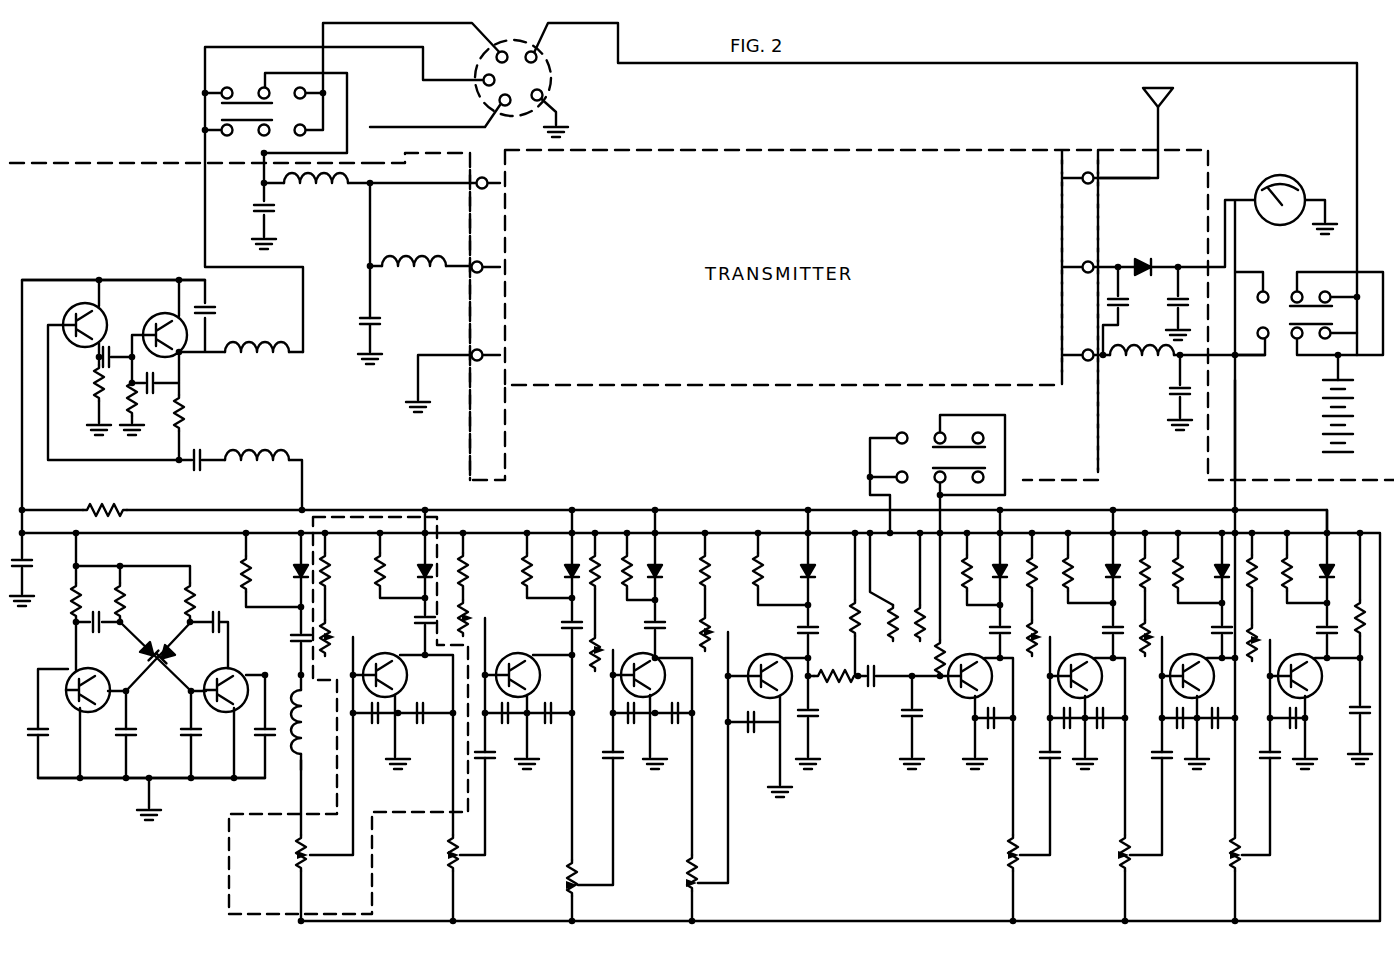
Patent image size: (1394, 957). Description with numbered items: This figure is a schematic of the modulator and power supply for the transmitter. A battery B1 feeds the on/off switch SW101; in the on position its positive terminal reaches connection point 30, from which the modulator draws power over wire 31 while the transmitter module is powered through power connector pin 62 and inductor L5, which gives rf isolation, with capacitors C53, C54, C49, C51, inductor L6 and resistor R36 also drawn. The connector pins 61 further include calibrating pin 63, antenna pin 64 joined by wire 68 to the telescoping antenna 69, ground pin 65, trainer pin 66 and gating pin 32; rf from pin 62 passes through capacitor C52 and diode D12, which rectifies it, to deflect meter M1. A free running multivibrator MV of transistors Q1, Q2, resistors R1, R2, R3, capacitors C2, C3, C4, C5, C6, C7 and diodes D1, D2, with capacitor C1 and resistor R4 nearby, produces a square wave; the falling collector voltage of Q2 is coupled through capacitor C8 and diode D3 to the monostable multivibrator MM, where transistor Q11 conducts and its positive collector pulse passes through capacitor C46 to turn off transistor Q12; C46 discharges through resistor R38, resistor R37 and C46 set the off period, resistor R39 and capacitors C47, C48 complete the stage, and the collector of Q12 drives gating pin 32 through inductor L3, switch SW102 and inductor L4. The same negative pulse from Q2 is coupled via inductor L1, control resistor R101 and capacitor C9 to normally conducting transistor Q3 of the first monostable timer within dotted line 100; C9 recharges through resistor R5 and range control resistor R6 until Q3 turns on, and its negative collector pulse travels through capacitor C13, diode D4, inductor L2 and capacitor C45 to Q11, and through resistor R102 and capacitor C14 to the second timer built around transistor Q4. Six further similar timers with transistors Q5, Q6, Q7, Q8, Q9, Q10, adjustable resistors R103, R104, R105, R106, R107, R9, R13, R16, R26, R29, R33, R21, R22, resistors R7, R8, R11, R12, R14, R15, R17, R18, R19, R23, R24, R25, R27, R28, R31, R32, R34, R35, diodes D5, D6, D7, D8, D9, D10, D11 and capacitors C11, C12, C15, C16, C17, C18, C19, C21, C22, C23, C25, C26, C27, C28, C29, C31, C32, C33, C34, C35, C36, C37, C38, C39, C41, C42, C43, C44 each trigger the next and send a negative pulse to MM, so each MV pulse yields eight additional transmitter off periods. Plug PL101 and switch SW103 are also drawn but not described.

The switch SW102 is at (232, 82).
The plug connector PL101 is at (548, 66).
The inductor L4 is at (316, 195).
The capacitor C49 is at (283, 223).
The inductor L6 is at (414, 249).
The capacitor C51 is at (386, 310).
The terminal 32 is at (506, 183).
The terminal 66 is at (503, 268).
The terminal 65 is at (505, 355).
The transmitter interface 61 is at (482, 392).
The modulator section MM is at (84, 276).
The transistor Q11 is at (98, 316).
The transistor Q12 is at (186, 360).
The capacitor C46 is at (121, 341).
The capacitor C47 is at (152, 395).
The capacitor C48 is at (221, 299).
The resistor R37 is at (96, 390).
The resistor R38 is at (130, 408).
The resistor R39 is at (198, 413).
The inductor L3 is at (257, 336).
The inductor L2 is at (257, 444).
The capacitor C45 is at (200, 473).
The resistor R36 is at (105, 501).
The antenna 69 is at (1170, 96).
The antenna lead 68 is at (1160, 155).
The terminal 64 is at (1062, 180).
The terminal 63 is at (1063, 268).
The terminal 62 is at (1062, 355).
The diode D12 is at (1151, 257).
The capacitor C52 is at (1108, 304).
The capacitor C53 is at (1185, 292).
The inductor L5 is at (1142, 366).
The capacitor C54 is at (1170, 393).
The meter M1 is at (1287, 176).
The switch SW101 is at (1280, 285).
The junction 30 is at (1240, 358).
The supply line 31 is at (1238, 420).
The battery B1 is at (1322, 386).
The switch SW103 is at (925, 432).
The control unit 100 is at (352, 517).
The multivibrator MV is at (96, 815).
The capacitor C1 is at (32, 553).
The resistor R1 is at (72, 598).
The resistor R2 is at (136, 596).
The resistor R3 is at (190, 580).
The capacitor C3 is at (96, 612).
The capacitor C6 is at (212, 634).
The diode D1 is at (136, 654).
The diode D2 is at (178, 658).
The transistor Q1 is at (68, 672).
The transistor Q2 is at (236, 680).
The capacitor C2 is at (27, 717).
The capacitor C4 is at (136, 720).
The capacitor C5 is at (181, 746).
The capacitor C7 is at (256, 746).
The resistor R4 is at (257, 580).
The diode D3 is at (289, 563).
The capacitor C8 is at (290, 628).
The inductor L1 is at (312, 722).
The capacitor C9 is at (308, 766).
The potentiometer R101 is at (272, 854).
The resistor R5 is at (337, 577).
The potentiometer R6 is at (332, 643).
The resistor R7 is at (366, 562).
The diode D4 is at (411, 562).
The capacitor C13 is at (412, 611).
The transistor Q3 is at (385, 660).
The capacitor C11 is at (373, 725).
The capacitor C12 is at (427, 725).
The potentiometer R102 is at (424, 854).
The resistor R8 is at (475, 563).
The potentiometer R9 is at (478, 613).
The capacitor C14 is at (500, 773).
The transistor Q4 is at (516, 662).
The capacitor C15 is at (504, 725).
The capacitor C16 is at (554, 703).
The resistor R11 is at (545, 562).
The diode D5 is at (558, 585).
The capacitor C17 is at (553, 620).
The potentiometer R103 is at (543, 884).
The resistor R12 is at (596, 550).
The potentiometer R13 is at (615, 639).
The capacitor C18 is at (601, 767).
The resistor R14 is at (630, 550).
The diode D6 is at (666, 561).
The capacitor C22 is at (670, 618).
The transistor Q5 is at (670, 675).
The capacitor C19 is at (637, 725).
The capacitor C21 is at (677, 725).
The potentiometer R104 is at (717, 883).
The resistor R15 is at (724, 562).
The potentiometer R16 is at (725, 629).
The transistor Q6 is at (763, 661).
The capacitor C23 is at (756, 734).
The resistor R17 is at (776, 562).
The diode D7 is at (791, 585).
The capacitor C26 is at (822, 621).
The resistor R18 is at (835, 686).
The capacitor C25 is at (823, 724).
The capacitor C27 is at (876, 689).
The capacitor C28 is at (895, 724).
The resistor R19 is at (851, 610).
The resistor R21 is at (888, 605).
The resistor R22 is at (914, 575).
The potentiometer R23 is at (912, 658).
The resistor R24 is at (962, 550).
The transistor Q7 is at (969, 663).
The capacitor C29 is at (996, 735).
The diode D8 is at (1010, 557).
The capacitor C31 is at (982, 619).
The potentiometer R105 is at (984, 853).
The resistor R25 is at (1034, 550).
The potentiometer R26 is at (1051, 634).
The resistor R27 is at (1068, 550).
The diode D9 is at (1101, 561).
The capacitor C35 is at (1101, 610).
The transistor Q8 is at (1080, 667).
The capacitor C32 is at (1050, 770).
The capacitor C33 is at (1069, 749).
The capacitor C34 is at (1103, 735).
The potentiometer R106 is at (1100, 853).
The resistor R28 is at (1146, 550).
The potentiometer R29 is at (1167, 634).
The resistor R31 is at (1179, 550).
The diode D10 is at (1208, 563).
The capacitor C39 is at (1207, 610).
The transistor Q9 is at (1192, 666).
The capacitor C36 is at (1175, 790).
The capacitor C37 is at (1178, 735).
The capacitor C38 is at (1213, 749).
The potentiometer R107 is at (1209, 853).
The resistor R32 is at (1253, 550).
The potentiometer R33 is at (1268, 635).
The resistor R34 is at (1289, 550).
The diode D11 is at (1332, 555).
The capacitor C43 is at (1307, 626).
The transistor Q10 is at (1300, 666).
The resistor R35 is at (1360, 640).
The capacitor C41 is at (1272, 770).
The capacitor C42 is at (1296, 735).
The capacitor C44 is at (1355, 725).